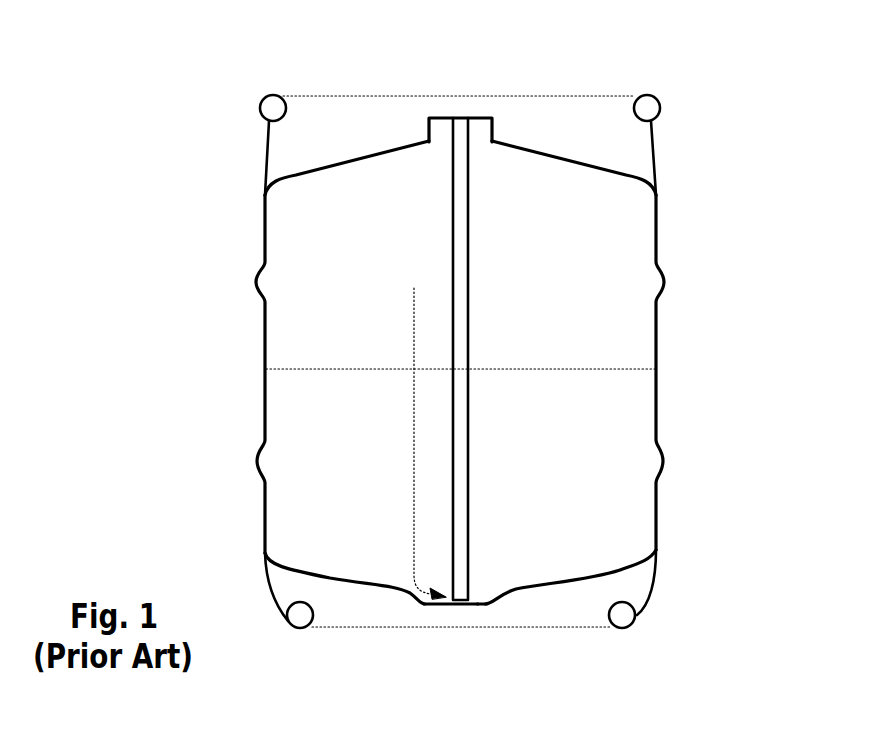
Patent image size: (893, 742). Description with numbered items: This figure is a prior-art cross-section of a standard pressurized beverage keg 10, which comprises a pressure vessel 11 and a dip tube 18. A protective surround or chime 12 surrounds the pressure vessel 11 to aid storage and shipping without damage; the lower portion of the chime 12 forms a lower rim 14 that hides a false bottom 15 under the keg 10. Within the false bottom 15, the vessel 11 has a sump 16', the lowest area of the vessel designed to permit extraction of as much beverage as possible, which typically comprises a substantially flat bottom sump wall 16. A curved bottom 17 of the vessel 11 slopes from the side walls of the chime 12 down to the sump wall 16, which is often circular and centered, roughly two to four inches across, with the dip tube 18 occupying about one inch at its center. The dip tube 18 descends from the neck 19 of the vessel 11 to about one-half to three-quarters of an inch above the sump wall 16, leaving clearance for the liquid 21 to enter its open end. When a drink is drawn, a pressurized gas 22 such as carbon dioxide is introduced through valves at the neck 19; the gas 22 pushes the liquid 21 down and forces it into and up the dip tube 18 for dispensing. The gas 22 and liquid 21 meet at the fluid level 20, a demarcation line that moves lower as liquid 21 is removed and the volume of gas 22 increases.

The keg 10 is at (262, 135).
The pressure vessel 11 is at (373, 252).
The chime 12 is at (293, 157).
The lower rim 14 is at (620, 627).
The false bottom 15 is at (390, 608).
The sump wall 16 is at (466, 650).
The sump 16' is at (527, 647).
The curved bottom 17 is at (366, 585).
The dip tube 18 is at (467, 282).
The neck 19 is at (492, 129).
The fluid level 20 is at (615, 368).
The liquid 21 is at (615, 425).
The pressurized gas 22 is at (415, 342).